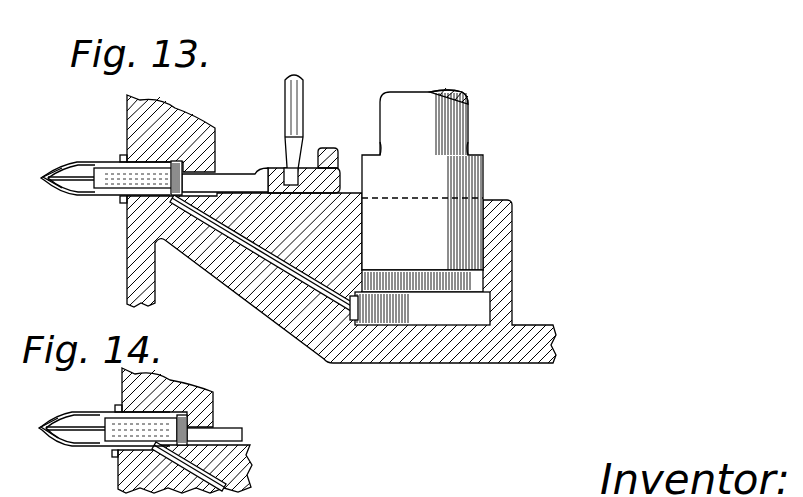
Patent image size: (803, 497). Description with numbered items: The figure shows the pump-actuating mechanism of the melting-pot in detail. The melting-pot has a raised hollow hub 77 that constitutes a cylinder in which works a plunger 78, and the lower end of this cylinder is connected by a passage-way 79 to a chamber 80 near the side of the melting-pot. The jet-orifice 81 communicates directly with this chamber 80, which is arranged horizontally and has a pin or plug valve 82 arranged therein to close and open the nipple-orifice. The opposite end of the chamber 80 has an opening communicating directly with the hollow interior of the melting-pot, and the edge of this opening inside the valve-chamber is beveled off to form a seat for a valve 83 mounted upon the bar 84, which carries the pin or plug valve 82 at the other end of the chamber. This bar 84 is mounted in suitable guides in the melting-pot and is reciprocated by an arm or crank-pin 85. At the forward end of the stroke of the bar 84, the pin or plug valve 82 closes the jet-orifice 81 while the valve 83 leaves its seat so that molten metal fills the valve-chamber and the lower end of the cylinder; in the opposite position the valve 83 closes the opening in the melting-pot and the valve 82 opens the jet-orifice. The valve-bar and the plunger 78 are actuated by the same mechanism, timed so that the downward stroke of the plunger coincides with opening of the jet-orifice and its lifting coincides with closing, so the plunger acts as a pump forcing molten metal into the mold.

In FIG. 13, the raised hollow hub 77 is at (505, 202).
In FIG. 14, the raised hollow hub 77 is at (182, 469).
In FIG. 13, the plunger 78 is at (470, 176).
In FIG. 13, the passage-way 79 is at (248, 245).
In FIG. 14, the passage-way 79 is at (222, 487).
In FIG. 13, the chamber 80 is at (75, 160).
In FIG. 14, the chamber 80 is at (78, 404).
In FIG. 13, the jet-orifice 81 is at (40, 177).
In FIG. 14, the jet-orifice 81 is at (40, 430).
In FIG. 13, the pin or plug valve 82 is at (75, 181).
In FIG. 14, the pin or plug valve 82 is at (68, 432).
In FIG. 13, the valve 83 is at (217, 147).
In FIG. 14, the valve 83 is at (213, 409).
In FIG. 13, the bar 84 is at (123, 176).
In FIG. 14, the bar 84 is at (120, 431).
In FIG. 13, the arm or crank-pin 85 is at (300, 102).